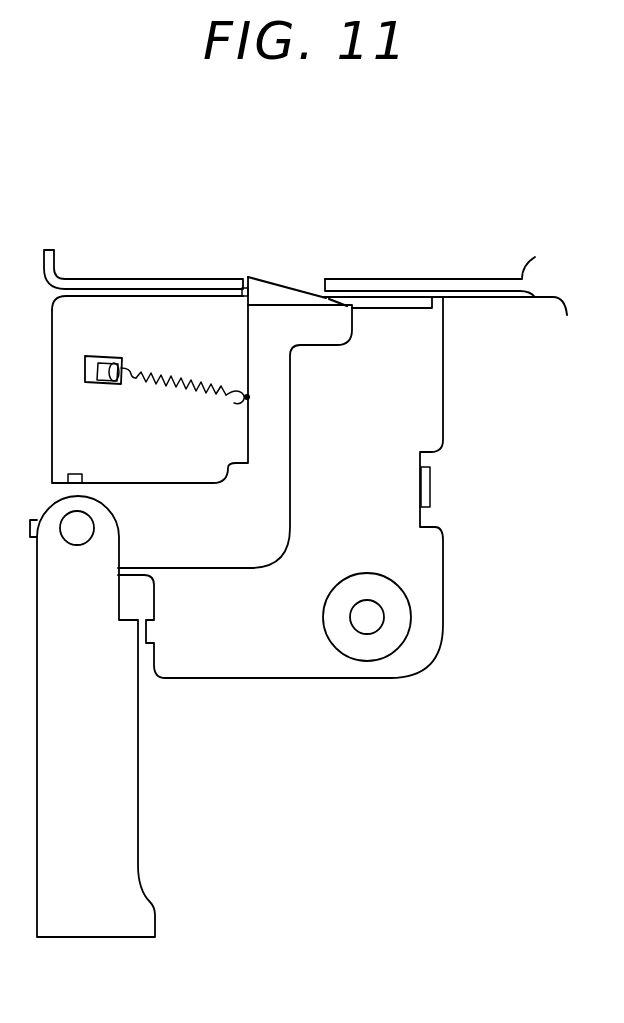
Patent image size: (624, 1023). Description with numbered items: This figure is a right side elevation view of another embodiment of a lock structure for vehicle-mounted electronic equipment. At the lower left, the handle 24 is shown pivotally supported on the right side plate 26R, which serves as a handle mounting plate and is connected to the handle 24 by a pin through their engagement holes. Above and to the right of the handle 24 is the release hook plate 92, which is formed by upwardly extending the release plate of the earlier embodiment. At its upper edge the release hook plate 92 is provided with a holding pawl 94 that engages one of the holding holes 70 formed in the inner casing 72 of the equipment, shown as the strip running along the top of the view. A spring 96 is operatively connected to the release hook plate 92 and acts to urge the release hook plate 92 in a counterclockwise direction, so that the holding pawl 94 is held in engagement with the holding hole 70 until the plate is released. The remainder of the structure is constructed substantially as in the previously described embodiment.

The handle 24 is at (125, 835).
The right side plate 26R is at (420, 650).
The holding holes 70 is at (308, 280).
The inner casing 72 is at (92, 275).
The release hook plate 92 is at (233, 553).
The holding pawls 94 is at (268, 292).
The spring 96 is at (163, 378).